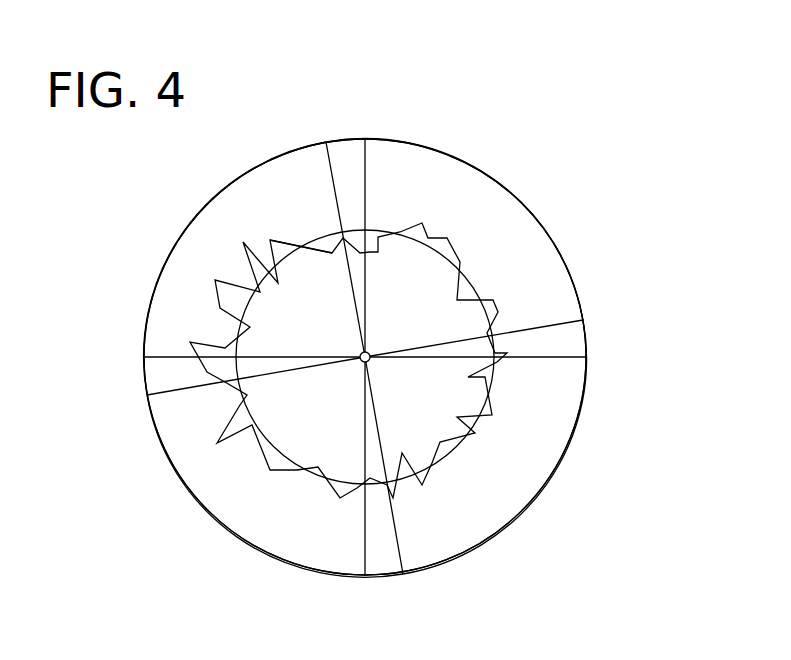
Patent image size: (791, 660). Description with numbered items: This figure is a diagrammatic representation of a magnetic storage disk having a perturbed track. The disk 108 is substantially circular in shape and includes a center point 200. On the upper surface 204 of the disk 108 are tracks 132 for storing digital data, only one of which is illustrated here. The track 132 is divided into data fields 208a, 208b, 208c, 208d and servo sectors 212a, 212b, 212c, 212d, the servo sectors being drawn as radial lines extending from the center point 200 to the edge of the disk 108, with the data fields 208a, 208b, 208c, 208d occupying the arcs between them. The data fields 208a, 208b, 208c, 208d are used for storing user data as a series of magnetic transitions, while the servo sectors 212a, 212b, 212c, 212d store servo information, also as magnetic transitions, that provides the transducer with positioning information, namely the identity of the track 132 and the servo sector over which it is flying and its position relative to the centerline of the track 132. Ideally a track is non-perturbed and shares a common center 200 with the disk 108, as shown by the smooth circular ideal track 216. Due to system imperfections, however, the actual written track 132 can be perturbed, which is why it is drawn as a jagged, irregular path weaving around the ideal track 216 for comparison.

The disk 108 is at (523, 207).
The track 132 is at (220, 299).
The center point 200 is at (370, 353).
The upper surface 204 is at (467, 167).
The data field 208a is at (547, 240).
The data field 208b is at (535, 480).
The data field 208c is at (187, 475).
The data field 208d is at (202, 228).
The servo sector 212a is at (347, 148).
The servo sector 212b is at (586, 343).
The servo sector 212c is at (396, 575).
The servo sector 212d is at (147, 376).
The ideal track 216 is at (315, 237).